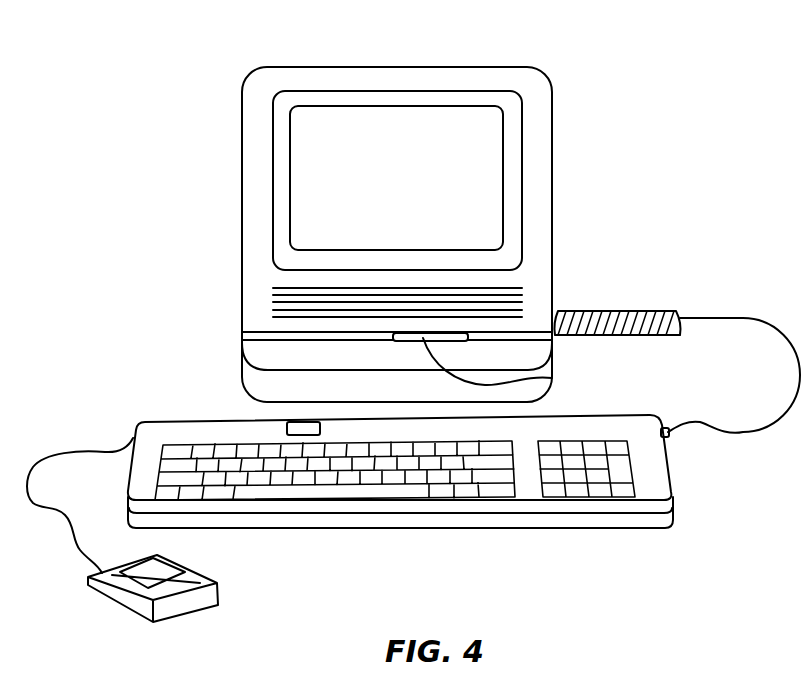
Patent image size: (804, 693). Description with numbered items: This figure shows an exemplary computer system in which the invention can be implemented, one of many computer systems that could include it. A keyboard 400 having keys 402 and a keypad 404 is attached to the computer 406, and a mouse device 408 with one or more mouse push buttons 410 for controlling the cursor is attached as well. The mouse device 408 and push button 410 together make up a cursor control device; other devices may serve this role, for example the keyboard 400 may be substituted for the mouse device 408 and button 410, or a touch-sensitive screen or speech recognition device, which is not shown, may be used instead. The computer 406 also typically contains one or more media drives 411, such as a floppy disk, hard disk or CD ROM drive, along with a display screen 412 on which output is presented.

The keyboard 400 is at (663, 480).
The keys 402 is at (422, 487).
The keypad 404 is at (598, 487).
The computer 406 is at (552, 132).
The mouse device 408 is at (200, 607).
The mouse push button 410 is at (117, 598).
The media drive 411 is at (552, 378).
The display screen 412 is at (440, 123).